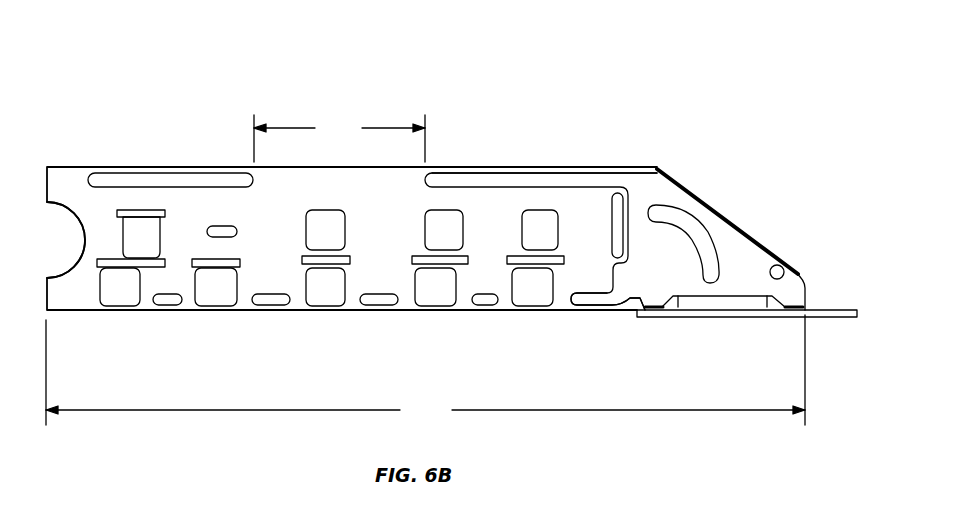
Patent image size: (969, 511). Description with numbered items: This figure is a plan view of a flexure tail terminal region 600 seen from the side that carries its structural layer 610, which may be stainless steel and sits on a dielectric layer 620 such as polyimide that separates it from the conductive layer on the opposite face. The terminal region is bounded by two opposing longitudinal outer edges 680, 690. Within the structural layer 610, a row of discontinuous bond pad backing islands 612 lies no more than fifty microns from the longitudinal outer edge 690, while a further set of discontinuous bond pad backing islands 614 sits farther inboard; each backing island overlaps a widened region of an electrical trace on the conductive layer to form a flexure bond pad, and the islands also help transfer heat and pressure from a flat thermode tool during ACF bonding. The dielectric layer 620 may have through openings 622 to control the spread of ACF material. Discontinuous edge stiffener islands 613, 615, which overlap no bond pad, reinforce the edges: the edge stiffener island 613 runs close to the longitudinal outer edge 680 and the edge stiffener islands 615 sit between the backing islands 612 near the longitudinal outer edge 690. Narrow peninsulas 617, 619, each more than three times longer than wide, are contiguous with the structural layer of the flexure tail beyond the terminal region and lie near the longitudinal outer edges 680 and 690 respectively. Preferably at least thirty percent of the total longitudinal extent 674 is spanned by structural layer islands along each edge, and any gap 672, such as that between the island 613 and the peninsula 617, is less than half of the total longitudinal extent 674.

The flexure tail terminal region 600 is at (693, 124).
The dielectric layer 620 is at (66, 178).
The discontinuous edge stiffener island 613 is at (182, 180).
The narrow peninsula 617 is at (531, 178).
The longitudinal outer edge 680 is at (626, 167).
The structural layer 610 is at (712, 224).
The gap 672 is at (339, 138).
The total longitudinal extent 674 is at (425, 370).
The discontinuous bond pad backing island 614 is at (140, 241).
The through opening 622 is at (170, 263).
The discontinuous bond pad backing island 612 is at (120, 287).
The discontinuous edge stiffener island 615 is at (170, 303).
The longitudinal outer edge 690 is at (553, 300).
The narrow peninsula 619 is at (587, 297).